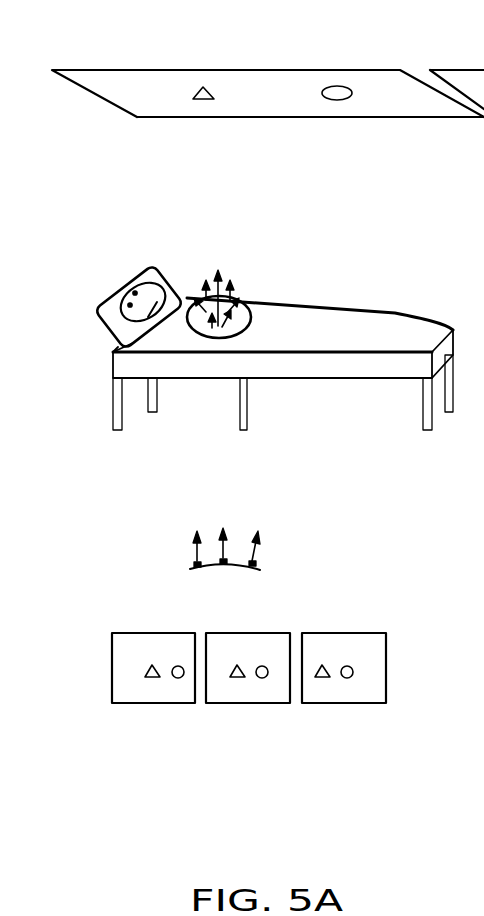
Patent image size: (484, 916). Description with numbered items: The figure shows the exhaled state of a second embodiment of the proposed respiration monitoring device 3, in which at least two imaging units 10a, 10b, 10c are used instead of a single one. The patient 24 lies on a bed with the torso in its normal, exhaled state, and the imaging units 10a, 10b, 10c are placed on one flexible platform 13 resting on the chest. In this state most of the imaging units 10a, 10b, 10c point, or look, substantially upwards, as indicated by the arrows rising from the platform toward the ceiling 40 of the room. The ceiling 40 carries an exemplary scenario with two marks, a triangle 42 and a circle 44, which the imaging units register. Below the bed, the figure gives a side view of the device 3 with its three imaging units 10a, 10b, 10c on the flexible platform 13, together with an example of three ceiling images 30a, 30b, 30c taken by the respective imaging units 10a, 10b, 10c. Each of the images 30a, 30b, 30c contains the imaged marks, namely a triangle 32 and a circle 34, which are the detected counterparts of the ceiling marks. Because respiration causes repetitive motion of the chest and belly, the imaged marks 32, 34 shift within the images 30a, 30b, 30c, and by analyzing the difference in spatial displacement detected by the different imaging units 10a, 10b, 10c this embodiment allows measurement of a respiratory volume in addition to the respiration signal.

The respiration monitoring device 3 is at (272, 280).
The imaging unit 10a is at (205, 295).
The imaging unit 10b is at (223, 272).
The imaging unit 10c is at (233, 293).
The flexible platform 13 is at (243, 326).
The patient 24 is at (129, 289).
The ceiling image 30a is at (152, 698).
The ceiling image 30b is at (243, 698).
The ceiling image 30c is at (335, 698).
The triangle 32 is at (150, 662).
The circle 34 is at (178, 664).
The ceiling 40 is at (376, 79).
The triangle 42 is at (201, 87).
The circle 44 is at (336, 94).